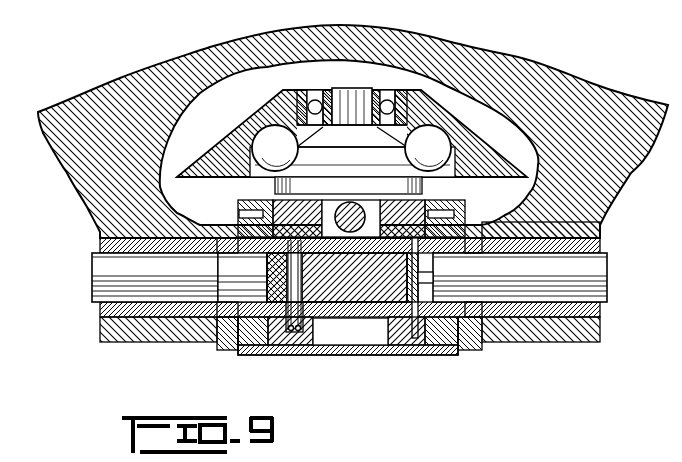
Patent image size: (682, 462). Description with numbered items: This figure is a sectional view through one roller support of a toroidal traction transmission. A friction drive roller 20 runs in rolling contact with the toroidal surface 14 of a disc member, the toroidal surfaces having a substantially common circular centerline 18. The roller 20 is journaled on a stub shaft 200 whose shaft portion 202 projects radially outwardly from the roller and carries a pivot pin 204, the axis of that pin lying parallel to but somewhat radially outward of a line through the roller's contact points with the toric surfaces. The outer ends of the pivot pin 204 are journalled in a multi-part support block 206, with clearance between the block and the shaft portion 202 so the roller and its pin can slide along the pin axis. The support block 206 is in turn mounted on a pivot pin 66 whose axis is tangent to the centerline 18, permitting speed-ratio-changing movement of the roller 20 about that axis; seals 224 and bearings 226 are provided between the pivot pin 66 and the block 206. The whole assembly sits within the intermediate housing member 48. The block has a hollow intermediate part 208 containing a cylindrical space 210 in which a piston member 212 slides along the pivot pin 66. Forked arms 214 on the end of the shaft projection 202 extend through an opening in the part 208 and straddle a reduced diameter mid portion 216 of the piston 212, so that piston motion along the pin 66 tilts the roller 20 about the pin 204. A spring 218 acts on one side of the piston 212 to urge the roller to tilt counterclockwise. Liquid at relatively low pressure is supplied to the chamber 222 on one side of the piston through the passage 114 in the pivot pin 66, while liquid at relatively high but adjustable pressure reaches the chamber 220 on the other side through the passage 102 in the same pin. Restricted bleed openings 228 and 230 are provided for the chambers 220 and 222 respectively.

The intermediate member 48 is at (80, 172).
The roller 20 is at (462, 126).
The toroidal surface 14 is at (528, 163).
The stub shaft 200 is at (340, 88).
The shaft portion 202 is at (367, 203).
The pivot pin 204 is at (345, 203).
The support block 206 is at (482, 233).
The intermediate part 208 is at (280, 200).
The restricted bleed opening 228 is at (455, 217).
The restricted bleed opening 230 is at (245, 215).
The pivot pin 66 is at (95, 290).
The seal 224 is at (227, 297).
The spring 218 is at (267, 263).
The passage 114 is at (268, 282).
The passage 102 is at (436, 274).
The forked arms 214 is at (326, 263).
The circular centerline 18 is at (348, 270).
The reduced diameter mid portion 216 is at (347, 322).
The bearing 226 is at (238, 333).
The chamber 222 is at (272, 330).
The cylindrical space 210 is at (283, 343).
The piston member 212 is at (315, 333).
The chamber 220 is at (418, 336).